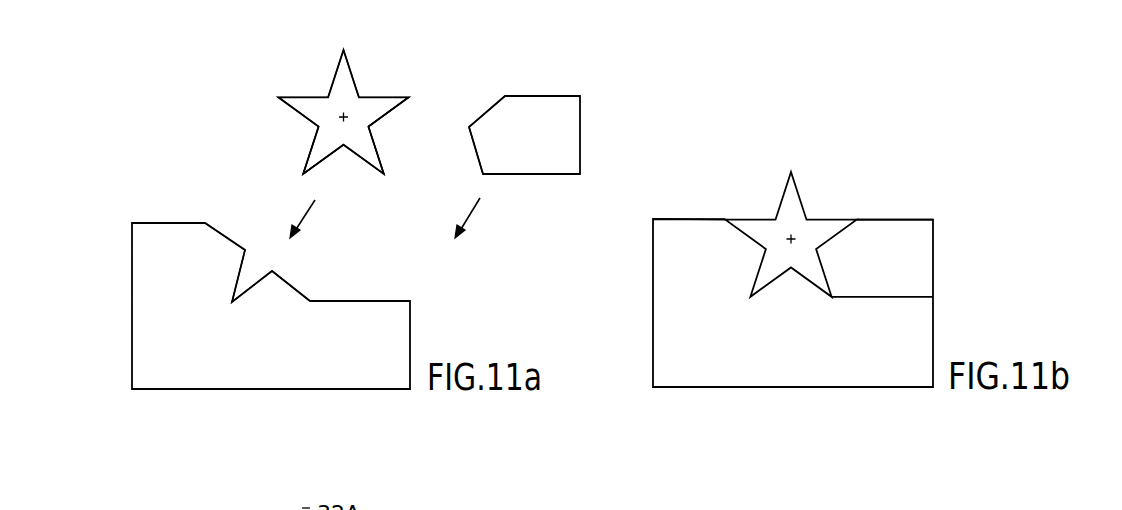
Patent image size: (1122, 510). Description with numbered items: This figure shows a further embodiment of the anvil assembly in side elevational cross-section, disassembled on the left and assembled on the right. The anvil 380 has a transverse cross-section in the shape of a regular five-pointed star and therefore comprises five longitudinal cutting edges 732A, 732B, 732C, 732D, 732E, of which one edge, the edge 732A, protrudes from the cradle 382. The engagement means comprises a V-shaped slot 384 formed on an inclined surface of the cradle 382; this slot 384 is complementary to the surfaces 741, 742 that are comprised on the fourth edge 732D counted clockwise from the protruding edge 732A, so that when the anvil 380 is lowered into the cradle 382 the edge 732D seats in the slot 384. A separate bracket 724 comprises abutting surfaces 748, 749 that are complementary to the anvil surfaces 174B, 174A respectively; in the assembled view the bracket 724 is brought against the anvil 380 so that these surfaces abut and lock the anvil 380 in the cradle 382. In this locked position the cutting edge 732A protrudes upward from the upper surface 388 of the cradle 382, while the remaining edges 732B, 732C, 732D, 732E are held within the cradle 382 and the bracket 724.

In FIG. 11A, the anvil 380 is at (320, 105).
In FIG. 11B, the anvil 380 is at (805, 232).
In FIG. 11A, the cutting edge 732A is at (343, 48).
In FIG. 11A, the cutting edge 732B is at (407, 97).
In FIG. 11A, the cutting edge 732C is at (385, 173).
In FIG. 11A, the cutting edge 732D is at (302, 172).
In FIG. 11A, the cutting edge 732E is at (280, 97).
In FIG. 11A, the anvil surface 174A is at (376, 147).
In FIG. 11A, the anvil surface 174B is at (392, 111).
In FIG. 11A, the anvil surface 741 is at (308, 158).
In FIG. 11A, the anvil surface 742 is at (326, 159).
In FIG. 11A, the bracket 724 is at (545, 95).
In FIG. 11B, the bracket 724 is at (895, 225).
In FIG. 11A, the abutting surface 748 is at (487, 111).
In FIG. 11A, the abutting surface 749 is at (477, 150).
In FIG. 11A, the cradle 382 is at (132, 310).
In FIG. 11B, the cradle 382 is at (675, 312).
In FIG. 11A, the V-shaped slot 384 is at (205, 222).
In FIG. 11B, the upper surface 388 is at (692, 219).